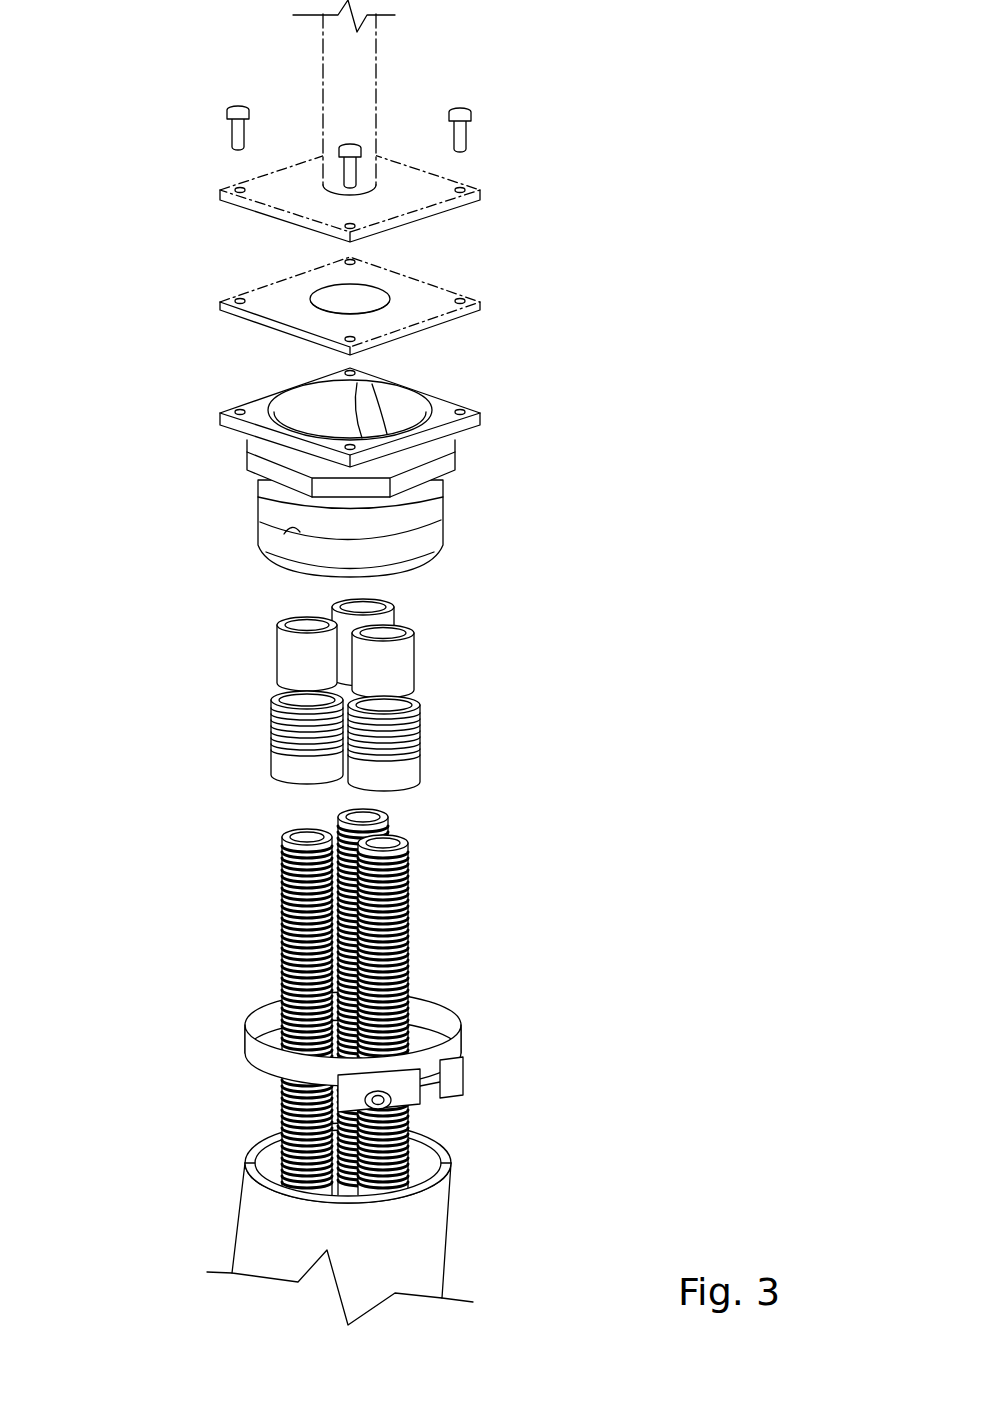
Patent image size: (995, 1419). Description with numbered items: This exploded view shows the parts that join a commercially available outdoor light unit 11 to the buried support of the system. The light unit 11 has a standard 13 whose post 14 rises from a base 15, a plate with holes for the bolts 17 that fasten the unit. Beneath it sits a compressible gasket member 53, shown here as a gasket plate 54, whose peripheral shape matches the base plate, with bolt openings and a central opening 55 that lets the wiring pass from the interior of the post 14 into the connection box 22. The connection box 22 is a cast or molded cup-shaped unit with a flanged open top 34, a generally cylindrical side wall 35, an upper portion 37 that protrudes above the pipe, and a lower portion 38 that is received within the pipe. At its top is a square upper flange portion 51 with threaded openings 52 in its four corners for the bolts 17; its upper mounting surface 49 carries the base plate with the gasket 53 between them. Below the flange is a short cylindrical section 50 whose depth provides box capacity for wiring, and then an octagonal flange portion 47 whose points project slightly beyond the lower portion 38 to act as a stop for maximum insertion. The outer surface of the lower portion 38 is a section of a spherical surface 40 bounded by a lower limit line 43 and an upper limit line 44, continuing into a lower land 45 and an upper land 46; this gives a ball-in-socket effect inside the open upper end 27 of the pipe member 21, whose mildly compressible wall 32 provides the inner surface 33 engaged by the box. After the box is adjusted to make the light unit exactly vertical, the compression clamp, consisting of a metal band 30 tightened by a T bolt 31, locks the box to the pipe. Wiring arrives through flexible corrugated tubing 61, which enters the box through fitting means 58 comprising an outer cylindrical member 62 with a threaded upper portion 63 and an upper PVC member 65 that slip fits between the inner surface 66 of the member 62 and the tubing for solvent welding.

The outdoor light unit 11 is at (290, 67).
The standard 13 is at (424, 62).
The post 14 is at (356, 60).
The base 15 is at (428, 190).
The bolts 17 is at (228, 122).
The pipe member 21 is at (374, 1070).
The connection box 22 is at (510, 510).
The open upper end 27 is at (373, 1244).
The metal band 30 is at (270, 1060).
The T bolt 31 is at (395, 1105).
The wall 32 is at (445, 1183).
The inner surface 33 is at (425, 1148).
The flanged open top 34 is at (386, 380).
The cylindrical side wall 35 is at (170, 491).
The upper portion 37 is at (512, 448).
The lower portion 38 is at (440, 553).
The spherical surface portion 40 is at (277, 520).
The lower limit line 43 is at (273, 493).
The upper limit line 44 is at (283, 523).
The lower land 45 is at (385, 555).
The upper land 46 is at (420, 500).
The octagonal flange portion 47 is at (455, 462).
The upper mounting surface 49 is at (255, 408).
The cylindrical section 50 is at (282, 458).
The square upper flange portion 51 is at (444, 382).
The threaded openings 52 is at (355, 370).
The gasket member 53 is at (408, 278).
The gasket 54 is at (303, 299).
The central opening 55 is at (307, 276).
The fitting means 58 is at (306, 661).
The corrugated tubing 61 is at (422, 893).
The outer cylindrical member 62 is at (326, 752).
The upper portion 63 is at (420, 725).
The upper PVC member 65 is at (277, 660).
The inner surface 66 is at (270, 722).